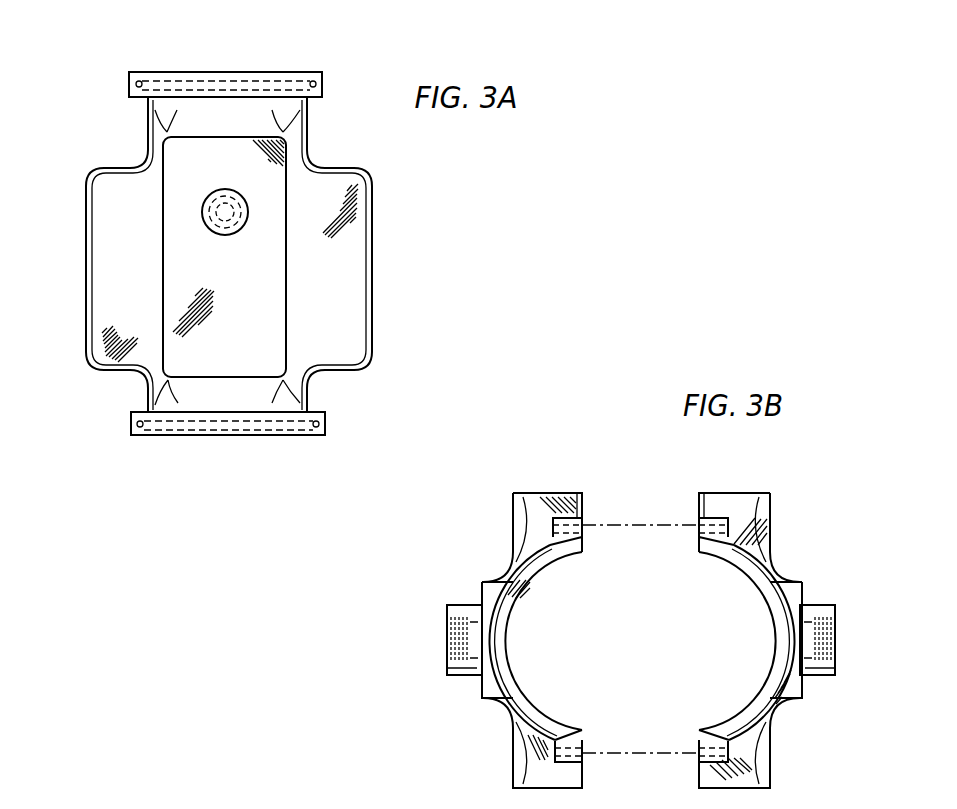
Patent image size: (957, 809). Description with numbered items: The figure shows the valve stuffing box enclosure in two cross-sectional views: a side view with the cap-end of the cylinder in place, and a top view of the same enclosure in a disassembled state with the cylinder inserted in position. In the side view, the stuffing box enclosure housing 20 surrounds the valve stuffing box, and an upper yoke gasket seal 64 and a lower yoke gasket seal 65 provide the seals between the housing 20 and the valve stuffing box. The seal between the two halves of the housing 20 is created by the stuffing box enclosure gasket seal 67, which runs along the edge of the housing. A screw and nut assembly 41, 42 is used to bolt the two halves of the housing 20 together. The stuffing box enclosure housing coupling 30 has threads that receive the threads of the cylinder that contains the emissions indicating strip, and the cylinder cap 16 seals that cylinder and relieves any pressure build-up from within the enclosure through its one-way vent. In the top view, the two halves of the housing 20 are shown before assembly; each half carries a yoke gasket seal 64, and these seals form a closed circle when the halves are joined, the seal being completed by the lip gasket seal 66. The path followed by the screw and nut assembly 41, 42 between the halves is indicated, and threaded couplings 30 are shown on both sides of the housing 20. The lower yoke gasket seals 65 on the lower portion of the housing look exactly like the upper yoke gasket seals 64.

In FIG. 3A, the cylinder cap 16 is at (213, 230).
In FIG. 3A, the stuffing box enclosure housing 20 is at (82, 207).
In FIG. 3B, the stuffing box enclosure housing 20 is at (503, 545).
In FIG. 3A, the stuffing box enclosure housing coupling 30 is at (240, 238).
In FIG. 3B, the stuffing box enclosure housing coupling 30 is at (457, 683).
In FIG. 3A, the screw 41 is at (226, 257).
In FIG. 3B, the screw 41 is at (640, 639).
In FIG. 3A, the nut 42 is at (139, 81).
In FIG. 3B, the nut 42 is at (667, 525).
In FIG. 3A, the upper yoke gasket seal 64 is at (241, 72).
In FIG. 3B, the upper yoke gasket seal 64 is at (538, 690).
In FIG. 3A, the lower yoke gasket seal 65 is at (188, 437).
In FIG. 3B, the lip gasket seal 66 is at (697, 553).
In FIG. 3A, the stuffing box enclosure gasket seal 67 is at (373, 232).